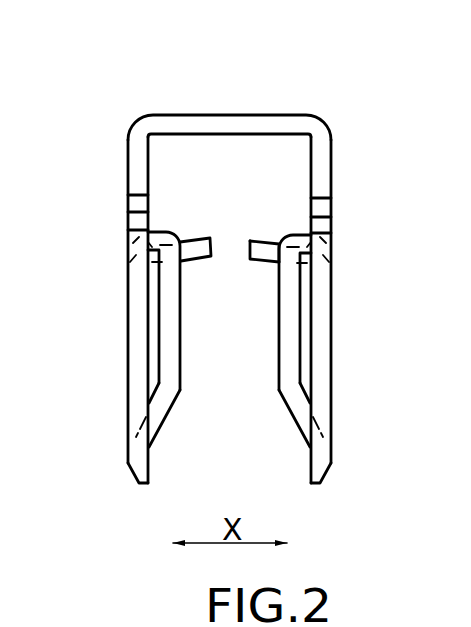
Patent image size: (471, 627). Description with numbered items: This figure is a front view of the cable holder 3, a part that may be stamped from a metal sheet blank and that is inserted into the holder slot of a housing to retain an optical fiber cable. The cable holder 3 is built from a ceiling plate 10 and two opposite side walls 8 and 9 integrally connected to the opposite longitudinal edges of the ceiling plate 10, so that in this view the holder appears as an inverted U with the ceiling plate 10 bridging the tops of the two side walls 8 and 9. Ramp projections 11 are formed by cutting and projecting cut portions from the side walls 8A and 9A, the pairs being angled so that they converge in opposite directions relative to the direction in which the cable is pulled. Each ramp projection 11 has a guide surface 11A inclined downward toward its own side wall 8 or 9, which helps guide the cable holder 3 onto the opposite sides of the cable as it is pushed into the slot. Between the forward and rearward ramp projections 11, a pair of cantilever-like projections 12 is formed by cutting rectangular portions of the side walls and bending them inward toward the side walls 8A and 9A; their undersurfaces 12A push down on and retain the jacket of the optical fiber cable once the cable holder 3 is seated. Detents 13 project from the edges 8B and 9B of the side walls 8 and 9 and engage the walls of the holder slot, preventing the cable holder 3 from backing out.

The cable holder 3 is at (118, 95).
The ceiling plate 10 is at (243, 123).
The side wall 8 is at (128, 170).
The side wall 8A is at (127, 298).
The front edge of side wall 8B is at (133, 332).
The side wall 9 is at (332, 170).
The side wall 9A is at (332, 302).
The front edge of side wall 9B is at (323, 333).
The detent 13 is at (322, 208).
The ramp projection 11 is at (172, 335).
The guide surface 11A is at (165, 412).
The cantilever-like projection 12 is at (265, 245).
The undersurface 12A is at (260, 262).